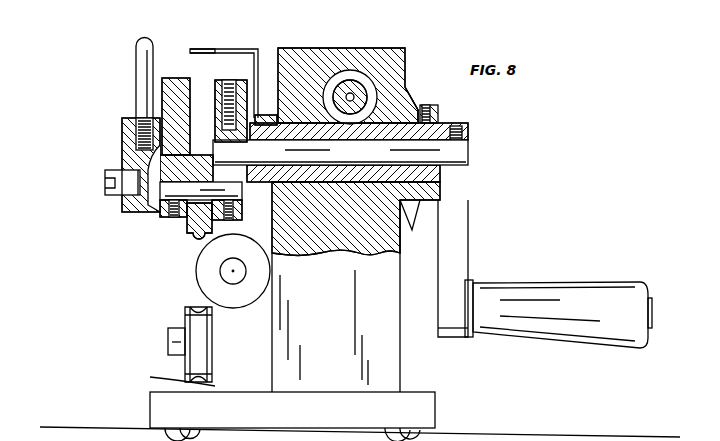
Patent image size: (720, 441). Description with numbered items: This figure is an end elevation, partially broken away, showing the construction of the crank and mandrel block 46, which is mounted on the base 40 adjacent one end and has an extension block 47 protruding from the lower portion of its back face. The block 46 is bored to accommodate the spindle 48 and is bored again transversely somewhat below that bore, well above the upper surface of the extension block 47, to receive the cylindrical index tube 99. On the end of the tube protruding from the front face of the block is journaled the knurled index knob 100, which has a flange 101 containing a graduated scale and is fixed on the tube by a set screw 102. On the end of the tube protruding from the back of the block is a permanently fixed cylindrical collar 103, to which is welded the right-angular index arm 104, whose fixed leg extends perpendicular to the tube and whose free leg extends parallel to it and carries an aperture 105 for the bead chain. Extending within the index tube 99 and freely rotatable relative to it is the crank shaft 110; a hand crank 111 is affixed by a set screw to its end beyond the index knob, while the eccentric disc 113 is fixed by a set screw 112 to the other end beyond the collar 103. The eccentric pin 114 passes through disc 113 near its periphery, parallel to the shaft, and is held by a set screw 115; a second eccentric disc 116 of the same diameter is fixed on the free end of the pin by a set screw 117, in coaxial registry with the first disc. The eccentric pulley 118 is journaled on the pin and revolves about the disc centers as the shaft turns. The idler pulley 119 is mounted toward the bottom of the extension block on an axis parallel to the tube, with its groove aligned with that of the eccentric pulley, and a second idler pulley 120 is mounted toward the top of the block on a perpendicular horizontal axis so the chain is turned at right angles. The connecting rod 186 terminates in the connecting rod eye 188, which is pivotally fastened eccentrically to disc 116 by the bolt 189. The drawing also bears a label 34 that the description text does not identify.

The feed assembly 34 is at (165, 247).
The base 40 is at (305, 416).
The crank and mandrel block 46 is at (323, 328).
The extension block 47 is at (165, 376).
The spindle 48 is at (350, 92).
The index tube 99 is at (294, 128).
The index knob 100 is at (420, 108).
The flange 101 is at (414, 222).
The set screw 102 is at (433, 108).
The collar 103 is at (264, 114).
The index arm 104 is at (229, 48).
The aperture 105 is at (205, 46).
The crank shaft 110 is at (455, 155).
The hand crank 111 is at (457, 243).
The set screw 112 is at (228, 84).
The eccentric disc 113 is at (213, 95).
The eccentric pin 114 is at (230, 190).
The set screw 115 is at (238, 220).
The second eccentric disc 116 is at (172, 96).
The set screw 117 is at (175, 220).
The eccentric pulley 118 is at (190, 237).
The idler pulley 119 is at (186, 320).
The second idler pulley 120 is at (205, 282).
The connecting rod 186 is at (140, 78).
The connecting rod eye 188 is at (132, 150).
The bolt 189 is at (108, 190).